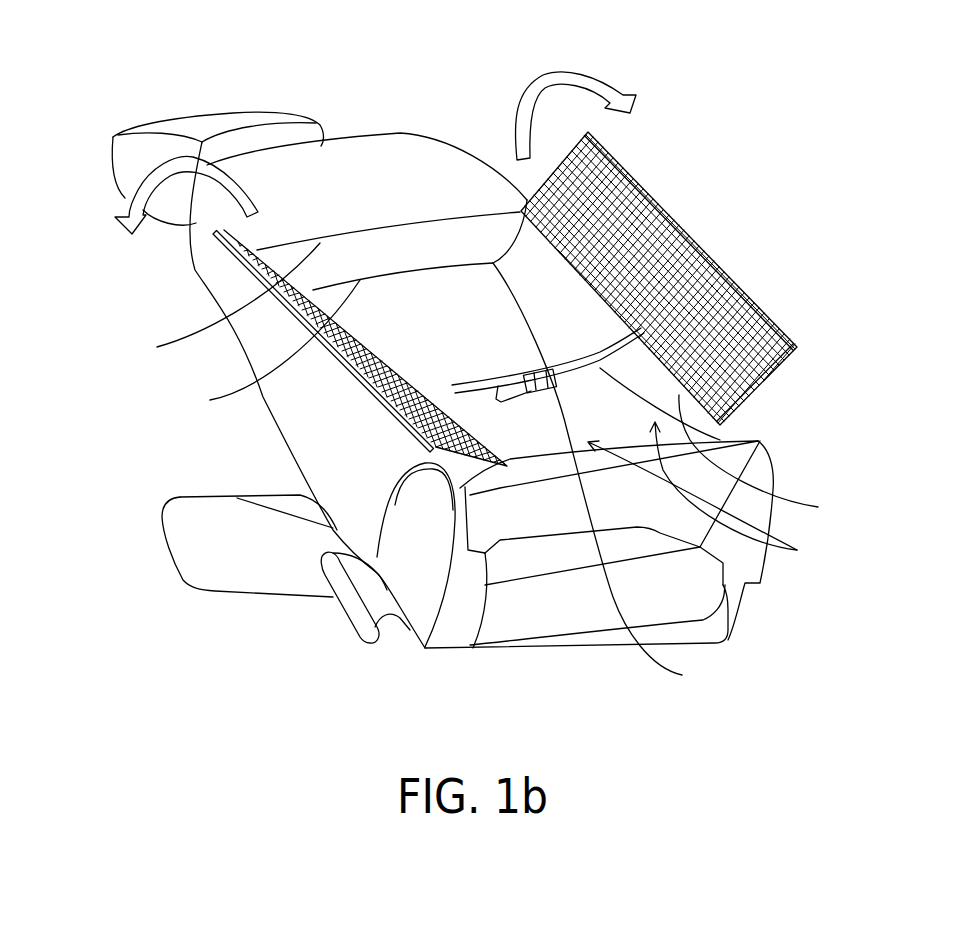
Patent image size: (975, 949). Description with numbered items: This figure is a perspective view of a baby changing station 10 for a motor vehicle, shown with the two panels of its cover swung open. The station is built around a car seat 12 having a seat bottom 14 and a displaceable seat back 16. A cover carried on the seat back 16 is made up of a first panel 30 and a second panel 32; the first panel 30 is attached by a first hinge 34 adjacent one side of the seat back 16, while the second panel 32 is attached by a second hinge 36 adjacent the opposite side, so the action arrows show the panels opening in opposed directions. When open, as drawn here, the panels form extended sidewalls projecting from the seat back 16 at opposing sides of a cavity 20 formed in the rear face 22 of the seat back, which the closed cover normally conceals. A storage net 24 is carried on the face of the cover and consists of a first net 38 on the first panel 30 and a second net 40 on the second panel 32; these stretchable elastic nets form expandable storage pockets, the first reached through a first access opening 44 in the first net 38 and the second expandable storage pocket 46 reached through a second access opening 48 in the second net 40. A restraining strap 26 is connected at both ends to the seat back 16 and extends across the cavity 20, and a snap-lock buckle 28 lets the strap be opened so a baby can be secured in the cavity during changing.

The baby changing station 10 is at (702, 87).
The car seat 12 is at (142, 572).
The seat bottom 14 is at (247, 567).
The seat back 16 is at (317, 422).
The cavity 20 is at (468, 302).
The rear face 22 is at (362, 182).
The storage net 24 is at (708, 493).
The restraining strap 26 is at (577, 370).
The snap-lock buckle 28 is at (602, 475).
The first panel 30 is at (267, 348).
The second panel 32 is at (690, 235).
The first hinge 34 is at (376, 308).
The second hinge 36 is at (764, 458).
The first net 38 is at (250, 249).
The second net 40 is at (759, 385).
The first access opening 44 is at (314, 348).
The second expandable storage pocket 46 is at (318, 250).
The second access opening 48 is at (763, 310).